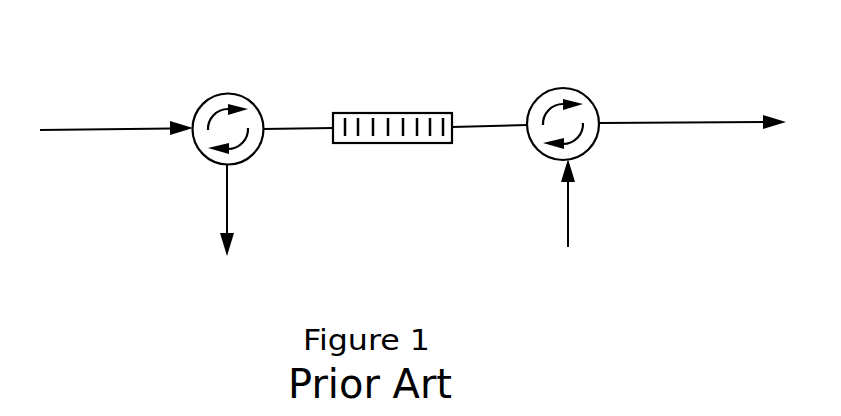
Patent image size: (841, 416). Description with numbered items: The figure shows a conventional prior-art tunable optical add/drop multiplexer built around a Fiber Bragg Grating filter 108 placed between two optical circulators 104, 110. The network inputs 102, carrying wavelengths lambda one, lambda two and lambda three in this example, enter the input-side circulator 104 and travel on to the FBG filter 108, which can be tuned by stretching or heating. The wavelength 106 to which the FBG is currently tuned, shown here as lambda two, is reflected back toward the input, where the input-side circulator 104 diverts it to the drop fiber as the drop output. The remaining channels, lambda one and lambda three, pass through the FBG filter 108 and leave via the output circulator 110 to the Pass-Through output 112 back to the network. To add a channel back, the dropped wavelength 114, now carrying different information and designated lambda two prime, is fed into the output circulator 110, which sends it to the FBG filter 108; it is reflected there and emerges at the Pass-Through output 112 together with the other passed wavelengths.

The inputs 102 is at (116, 108).
The input-side circulator 104 is at (228, 114).
The wavelength 106 is at (212, 218).
The Fiber Bragg Grating filter 108 is at (395, 114).
The output circulator 110 is at (563, 104).
The Pass-Through output 112 is at (692, 89).
The dropped wavelength 114 is at (577, 225).